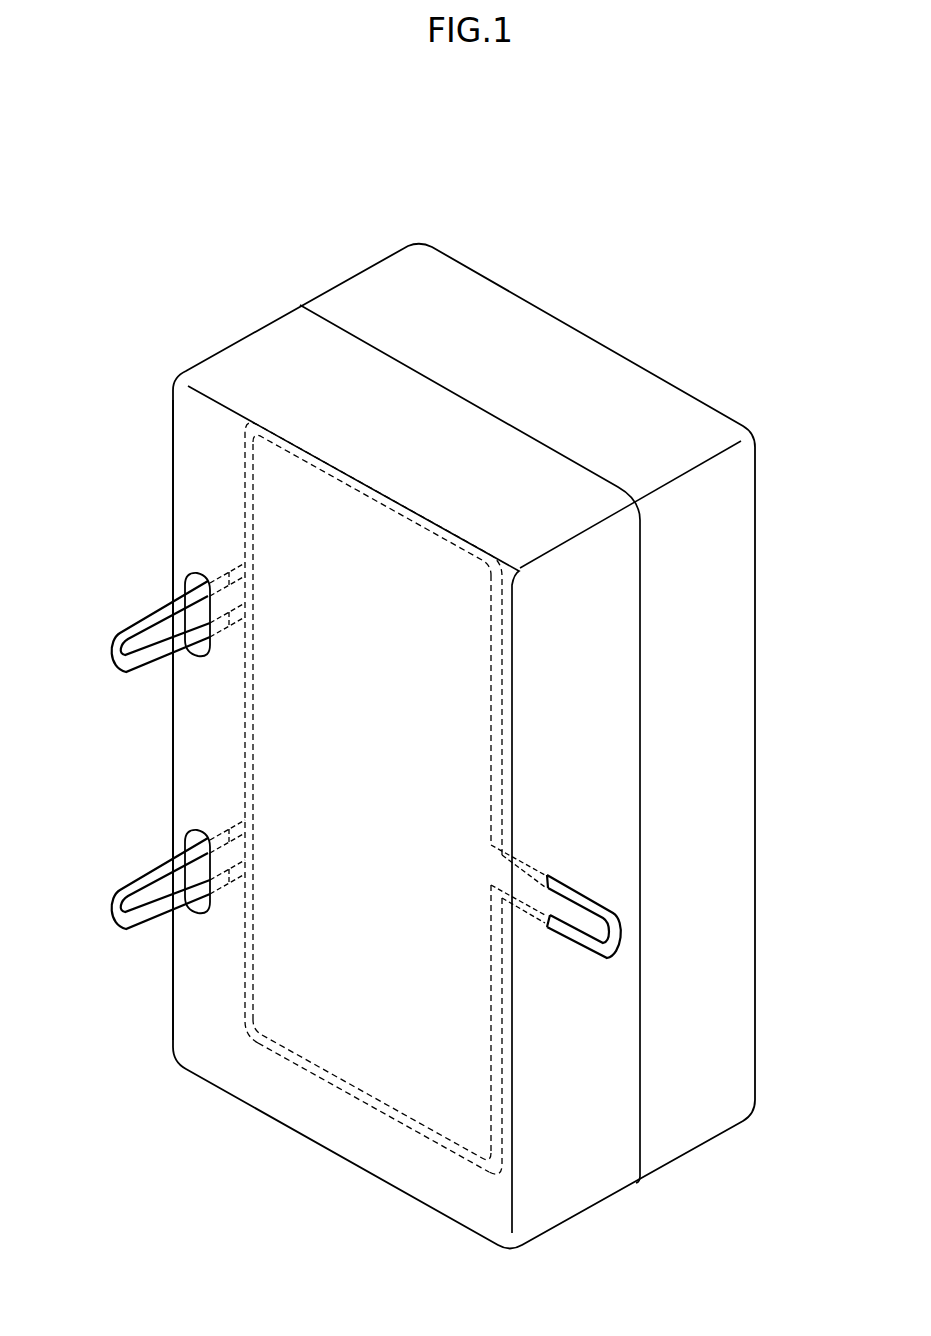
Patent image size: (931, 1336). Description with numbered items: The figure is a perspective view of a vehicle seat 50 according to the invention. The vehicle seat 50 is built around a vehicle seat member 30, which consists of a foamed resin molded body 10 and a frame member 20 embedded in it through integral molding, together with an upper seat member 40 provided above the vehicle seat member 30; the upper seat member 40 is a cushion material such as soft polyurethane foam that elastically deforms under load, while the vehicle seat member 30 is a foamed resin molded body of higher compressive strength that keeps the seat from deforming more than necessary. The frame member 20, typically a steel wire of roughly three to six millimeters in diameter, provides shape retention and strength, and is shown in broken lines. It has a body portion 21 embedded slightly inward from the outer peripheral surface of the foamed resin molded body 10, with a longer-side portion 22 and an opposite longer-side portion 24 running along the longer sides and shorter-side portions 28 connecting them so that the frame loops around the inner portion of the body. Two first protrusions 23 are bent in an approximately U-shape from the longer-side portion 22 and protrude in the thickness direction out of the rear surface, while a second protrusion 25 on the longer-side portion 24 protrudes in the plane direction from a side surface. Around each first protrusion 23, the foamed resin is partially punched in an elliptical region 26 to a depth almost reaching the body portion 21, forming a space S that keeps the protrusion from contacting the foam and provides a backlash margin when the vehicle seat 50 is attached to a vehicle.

The vehicle seat 50 is at (733, 240).
The foamed resin molded body 10 is at (259, 363).
The vehicle seat member 30 is at (166, 422).
The upper seat member 40 is at (391, 289).
The frame member 20 is at (236, 711).
The longer-side portion 22 is at (253, 680).
The longer-side portion 24 is at (490, 672).
The shorter-side portion 28 is at (378, 497).
The body portion 21 is at (347, 1093).
The second protrusion 25 is at (587, 893).
The region 26 is at (197, 620).
The space S is at (198, 648).
The first protrusion 23 is at (117, 667).